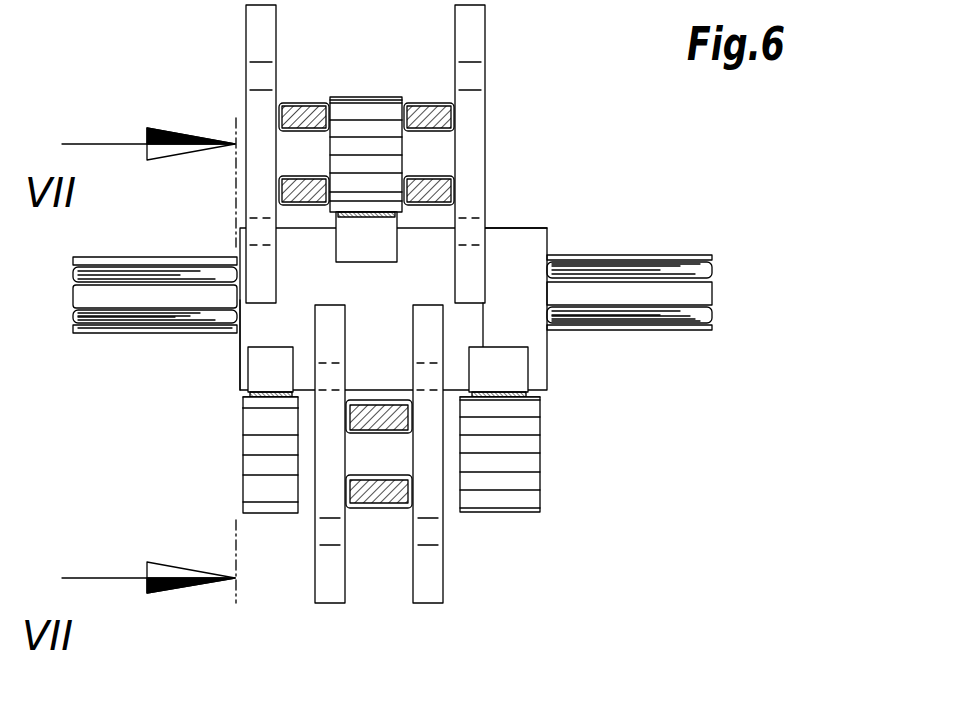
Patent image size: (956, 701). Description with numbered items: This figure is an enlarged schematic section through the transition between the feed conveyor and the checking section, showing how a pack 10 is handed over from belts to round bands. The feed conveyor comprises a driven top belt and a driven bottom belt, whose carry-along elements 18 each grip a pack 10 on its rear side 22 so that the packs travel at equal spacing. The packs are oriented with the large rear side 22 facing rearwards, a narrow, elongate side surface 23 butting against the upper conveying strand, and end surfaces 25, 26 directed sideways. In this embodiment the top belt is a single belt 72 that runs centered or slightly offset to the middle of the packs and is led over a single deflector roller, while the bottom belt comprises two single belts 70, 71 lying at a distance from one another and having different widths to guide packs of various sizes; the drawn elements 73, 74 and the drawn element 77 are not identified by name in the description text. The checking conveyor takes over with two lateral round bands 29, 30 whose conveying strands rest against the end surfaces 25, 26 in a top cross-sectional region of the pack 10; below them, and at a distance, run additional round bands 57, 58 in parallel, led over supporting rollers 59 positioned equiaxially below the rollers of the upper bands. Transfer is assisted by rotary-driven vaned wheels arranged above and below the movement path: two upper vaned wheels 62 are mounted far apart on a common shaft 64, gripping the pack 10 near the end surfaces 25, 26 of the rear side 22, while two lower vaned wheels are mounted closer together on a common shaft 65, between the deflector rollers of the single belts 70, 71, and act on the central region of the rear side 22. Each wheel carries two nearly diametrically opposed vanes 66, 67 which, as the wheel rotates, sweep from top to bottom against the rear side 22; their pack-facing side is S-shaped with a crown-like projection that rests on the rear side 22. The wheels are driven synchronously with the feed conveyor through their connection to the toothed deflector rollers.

The pack 10 is at (527, 242).
The carry-along element 18 is at (367, 250).
The rear side 22 is at (395, 318).
The side surface 23 is at (512, 229).
The end surface 25 is at (240, 355).
The end surface 26 is at (548, 234).
The round band 29 is at (113, 267).
The round band 30 is at (702, 273).
The round band 57 is at (92, 330).
The round band 58 is at (697, 313).
The supporting roller 59 is at (127, 332).
The upper vaned wheel 62 is at (262, 44).
The shaft 64 is at (298, 155).
The shaft 65 is at (383, 448).
The vane 66 is at (332, 593).
The vane 67 is at (433, 585).
The single belt 70 is at (263, 400).
The single belt 71 is at (497, 397).
The single belt 72 is at (377, 210).
The right gear 73 is at (522, 495).
The left gear 74 is at (267, 462).
The drive element 77 is at (443, 700).